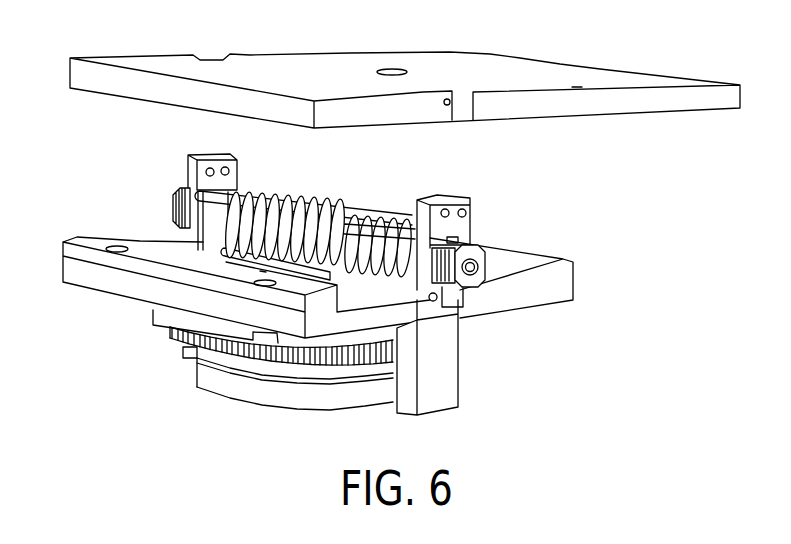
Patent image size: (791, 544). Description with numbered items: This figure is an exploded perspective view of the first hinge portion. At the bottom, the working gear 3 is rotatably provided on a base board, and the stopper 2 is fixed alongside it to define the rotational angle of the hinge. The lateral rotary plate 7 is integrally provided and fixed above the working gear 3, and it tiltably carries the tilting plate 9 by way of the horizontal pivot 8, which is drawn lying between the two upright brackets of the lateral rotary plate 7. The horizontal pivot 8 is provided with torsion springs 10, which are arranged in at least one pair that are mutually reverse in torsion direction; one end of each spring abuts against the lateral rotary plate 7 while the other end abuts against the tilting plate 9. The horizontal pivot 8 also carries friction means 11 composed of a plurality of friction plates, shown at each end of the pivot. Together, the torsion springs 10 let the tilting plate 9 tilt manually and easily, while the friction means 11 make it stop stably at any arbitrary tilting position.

The stopper 2 is at (438, 356).
The working gear 3 is at (178, 339).
The lateral rotary plate 7 is at (528, 298).
The horizontal pivot 8 is at (480, 267).
The tilting plate 9 is at (552, 68).
The torsion spring 10 is at (345, 206).
The friction means 11 is at (172, 205).